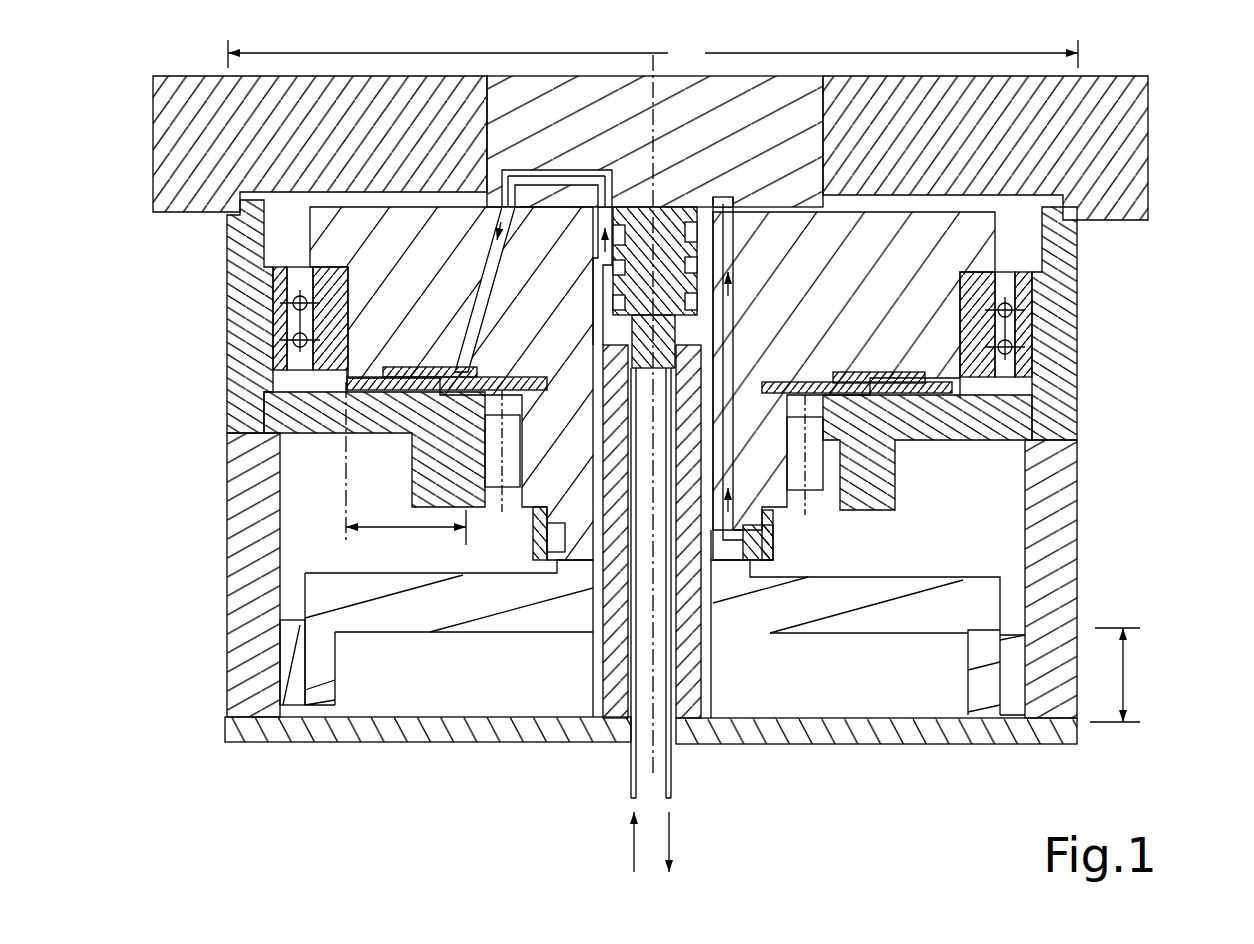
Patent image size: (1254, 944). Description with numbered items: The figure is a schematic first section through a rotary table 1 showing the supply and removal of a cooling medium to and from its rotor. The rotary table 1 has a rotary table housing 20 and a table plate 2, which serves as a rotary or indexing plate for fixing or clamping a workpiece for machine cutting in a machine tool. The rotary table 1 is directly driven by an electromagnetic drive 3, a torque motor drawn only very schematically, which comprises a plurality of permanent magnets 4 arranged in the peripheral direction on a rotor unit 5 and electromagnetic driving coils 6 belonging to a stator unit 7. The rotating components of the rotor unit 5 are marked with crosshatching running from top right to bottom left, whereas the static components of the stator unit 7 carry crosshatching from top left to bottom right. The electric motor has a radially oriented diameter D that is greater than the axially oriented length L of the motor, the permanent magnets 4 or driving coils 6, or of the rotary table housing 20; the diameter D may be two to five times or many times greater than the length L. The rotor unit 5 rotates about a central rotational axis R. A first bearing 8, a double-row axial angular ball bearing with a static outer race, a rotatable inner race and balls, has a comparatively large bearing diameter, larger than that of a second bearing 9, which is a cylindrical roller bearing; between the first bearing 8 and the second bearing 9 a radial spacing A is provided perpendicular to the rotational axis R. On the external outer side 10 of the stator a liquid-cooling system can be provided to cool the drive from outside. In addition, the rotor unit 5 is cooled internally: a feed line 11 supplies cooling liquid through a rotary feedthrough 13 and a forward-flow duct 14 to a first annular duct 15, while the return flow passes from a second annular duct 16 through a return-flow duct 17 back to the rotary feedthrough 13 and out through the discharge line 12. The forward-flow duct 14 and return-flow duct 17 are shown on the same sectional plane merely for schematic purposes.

The rotary table 1 is at (1130, 423).
The table plate 2 is at (1118, 143).
The electromagnetic drive 3 is at (278, 768).
The permanent magnets 4 is at (303, 688).
The rotor unit 5 is at (520, 666).
The electromagnetic driving coils 6 is at (243, 596).
The stator unit 7 is at (205, 477).
The first bearing 8 is at (1022, 326).
The second bearing 9 is at (832, 523).
The external outer side 10 is at (226, 540).
The feed line 11 is at (633, 765).
The discharge line 12 is at (672, 775).
The rotary feedthrough 13 is at (661, 200).
The forward-flow duct 14 is at (563, 182).
The first annular duct 15 is at (425, 368).
The second annular duct 16 is at (772, 546).
The return-flow duct 17 is at (727, 196).
The rotary table housing 20 is at (1060, 277).
The diameter D is at (653, 56).
The radial spacing A is at (405, 527).
The length L is at (1126, 672).
The rotational axis R is at (655, 762).